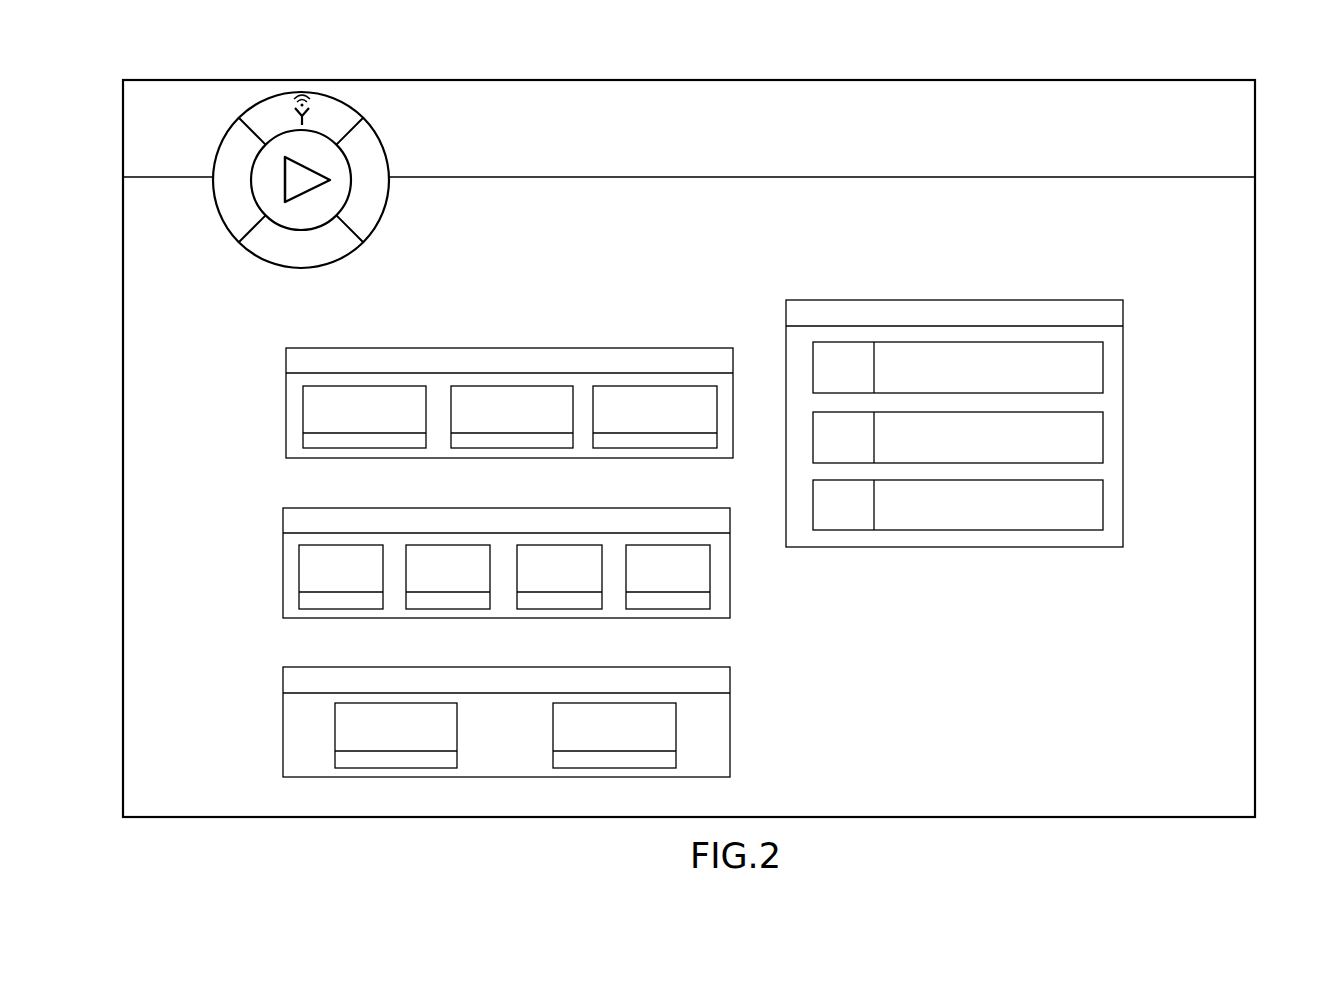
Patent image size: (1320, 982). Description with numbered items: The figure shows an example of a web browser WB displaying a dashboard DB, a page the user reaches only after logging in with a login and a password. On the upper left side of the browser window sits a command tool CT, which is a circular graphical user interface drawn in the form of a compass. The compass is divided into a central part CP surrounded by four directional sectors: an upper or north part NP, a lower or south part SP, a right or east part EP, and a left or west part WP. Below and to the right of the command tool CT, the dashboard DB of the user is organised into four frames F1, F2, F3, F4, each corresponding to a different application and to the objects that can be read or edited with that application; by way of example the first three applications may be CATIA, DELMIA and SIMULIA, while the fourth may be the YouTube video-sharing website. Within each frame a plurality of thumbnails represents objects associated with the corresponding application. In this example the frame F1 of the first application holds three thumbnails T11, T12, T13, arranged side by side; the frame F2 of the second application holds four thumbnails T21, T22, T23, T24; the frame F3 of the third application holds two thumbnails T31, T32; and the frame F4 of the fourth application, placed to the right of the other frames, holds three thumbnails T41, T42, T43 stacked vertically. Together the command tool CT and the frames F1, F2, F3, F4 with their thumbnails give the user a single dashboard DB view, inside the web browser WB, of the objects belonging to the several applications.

The web browser WB is at (1252, 120).
The dashboard DB is at (1226, 258).
The command tool CT is at (220, 113).
The upper or north part NP is at (328, 113).
The central part CP is at (333, 163).
The right or east part EP is at (362, 217).
The left or west part WP is at (248, 220).
The lower or south part SP is at (277, 243).
The frame F1 is at (535, 323).
The frame F2 is at (260, 570).
The frame F3 is at (265, 736).
The frame F4 is at (941, 575).
The thumbnail T11 is at (359, 443).
The thumbnail T12 is at (499, 443).
The thumbnail T13 is at (652, 443).
The thumbnail T21 is at (320, 607).
The thumbnail T22 is at (423, 607).
The thumbnail T23 is at (537, 607).
The thumbnail T24 is at (643, 610).
The thumbnail T31 is at (378, 763).
The thumbnail T32 is at (602, 762).
The thumbnail T41 is at (1103, 378).
The thumbnail T42 is at (1103, 449).
The thumbnail T43 is at (1103, 517).